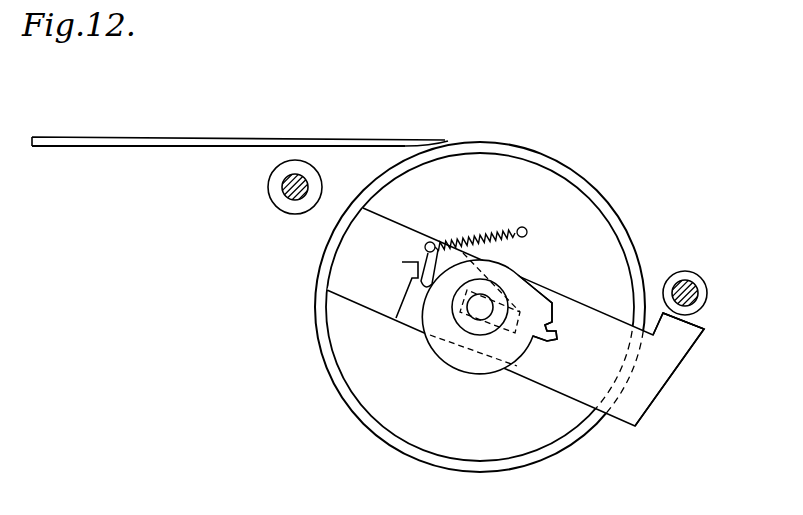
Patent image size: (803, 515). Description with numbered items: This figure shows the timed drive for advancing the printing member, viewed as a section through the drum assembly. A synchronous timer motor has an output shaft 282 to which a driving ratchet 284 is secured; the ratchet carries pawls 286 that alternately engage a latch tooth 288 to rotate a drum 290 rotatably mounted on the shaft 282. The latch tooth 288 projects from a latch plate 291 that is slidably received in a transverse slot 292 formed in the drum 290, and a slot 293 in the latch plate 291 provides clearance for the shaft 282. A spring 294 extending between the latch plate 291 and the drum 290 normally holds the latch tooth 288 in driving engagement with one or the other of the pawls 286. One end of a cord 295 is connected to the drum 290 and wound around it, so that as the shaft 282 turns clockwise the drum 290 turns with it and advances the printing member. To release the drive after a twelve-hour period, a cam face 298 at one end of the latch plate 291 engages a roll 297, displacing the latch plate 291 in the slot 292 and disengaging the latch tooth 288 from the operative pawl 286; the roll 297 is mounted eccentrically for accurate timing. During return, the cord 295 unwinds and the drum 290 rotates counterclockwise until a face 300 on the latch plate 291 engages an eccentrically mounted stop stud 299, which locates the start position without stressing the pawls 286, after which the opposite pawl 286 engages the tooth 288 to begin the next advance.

The output shaft 282 is at (492, 298).
The driving ratchet 284 is at (468, 366).
The pawls 286 is at (555, 342).
The latch tooth 288 is at (433, 276).
The drum 290 is at (387, 446).
The latch plate 291 is at (630, 425).
The transverse slot 292 is at (595, 312).
The slot 293 is at (527, 340).
The spring 294 is at (449, 236).
The cord 295 is at (289, 139).
The roll 297 is at (270, 202).
The cam face 298 is at (665, 386).
The stop stud 299 is at (698, 272).
The face 300 is at (698, 323).